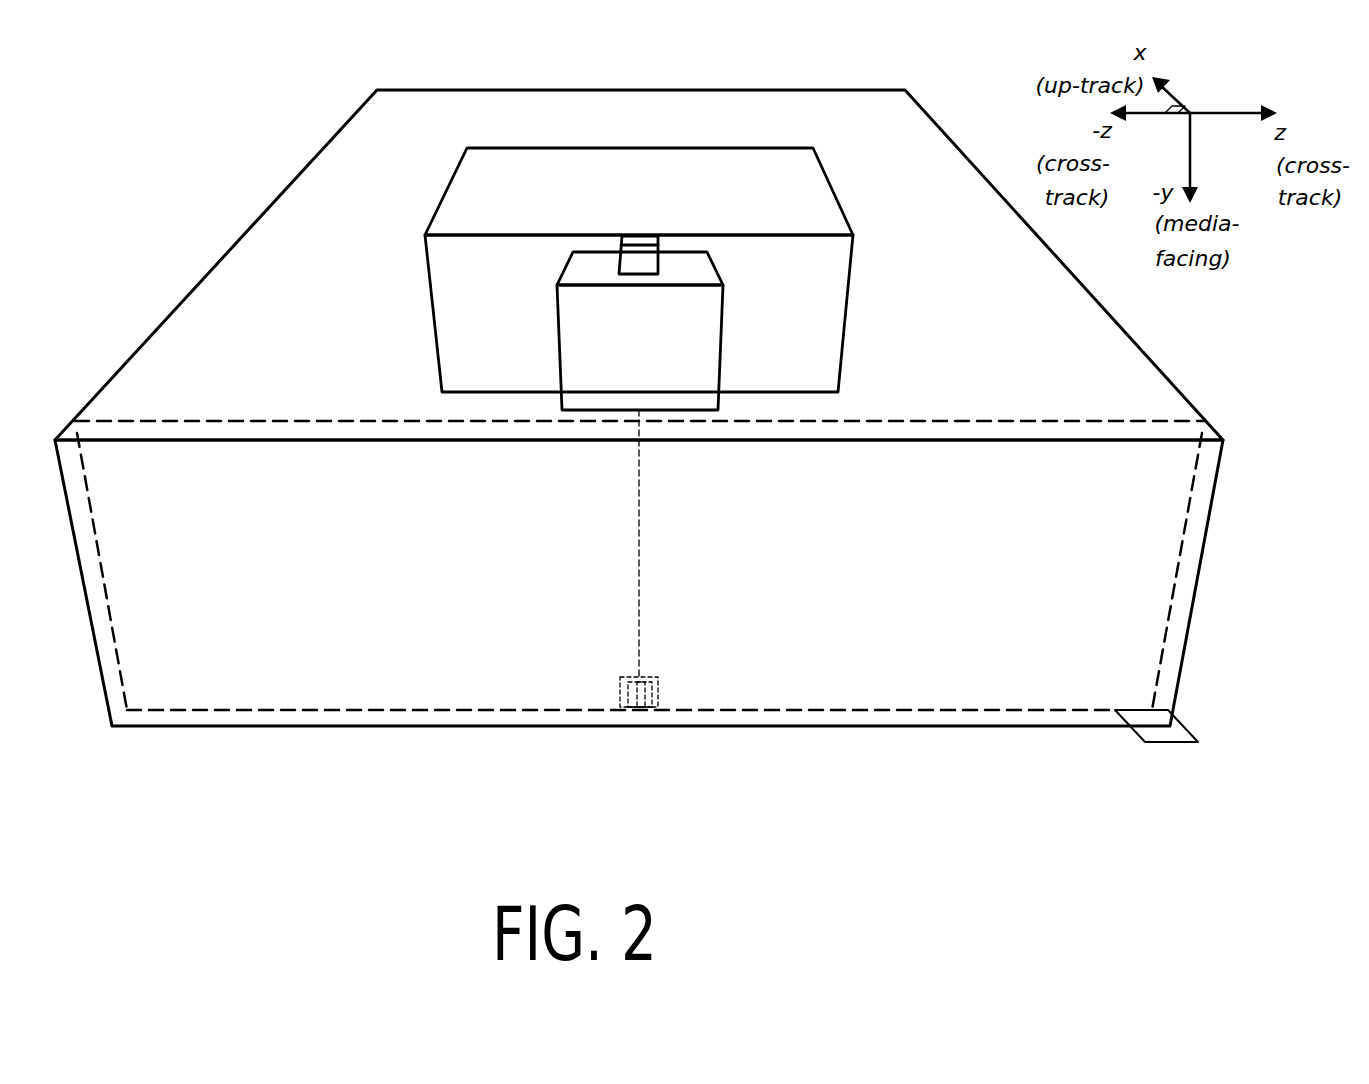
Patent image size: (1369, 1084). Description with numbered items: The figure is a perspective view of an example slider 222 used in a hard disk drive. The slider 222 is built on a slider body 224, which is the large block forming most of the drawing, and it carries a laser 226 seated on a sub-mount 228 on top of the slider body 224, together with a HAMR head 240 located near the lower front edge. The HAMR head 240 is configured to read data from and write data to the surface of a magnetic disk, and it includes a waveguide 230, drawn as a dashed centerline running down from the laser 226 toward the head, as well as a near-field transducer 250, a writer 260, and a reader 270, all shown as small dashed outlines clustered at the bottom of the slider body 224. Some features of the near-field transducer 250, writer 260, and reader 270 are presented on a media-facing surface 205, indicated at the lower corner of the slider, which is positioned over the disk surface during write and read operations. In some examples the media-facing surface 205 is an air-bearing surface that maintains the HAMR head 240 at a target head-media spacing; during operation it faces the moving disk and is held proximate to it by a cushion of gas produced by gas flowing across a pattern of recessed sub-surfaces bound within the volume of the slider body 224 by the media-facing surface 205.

The slider 222 is at (639, 391).
The slider body 224 is at (897, 135).
The media-facing surface 205 is at (1175, 733).
The sub-mount 228 is at (448, 313).
The laser 226 is at (703, 354).
The waveguide 230 is at (640, 589).
The HAMR head 240 is at (655, 720).
The near-field transducer 250 is at (642, 707).
The writer 260 is at (652, 693).
The reader 270 is at (635, 687).